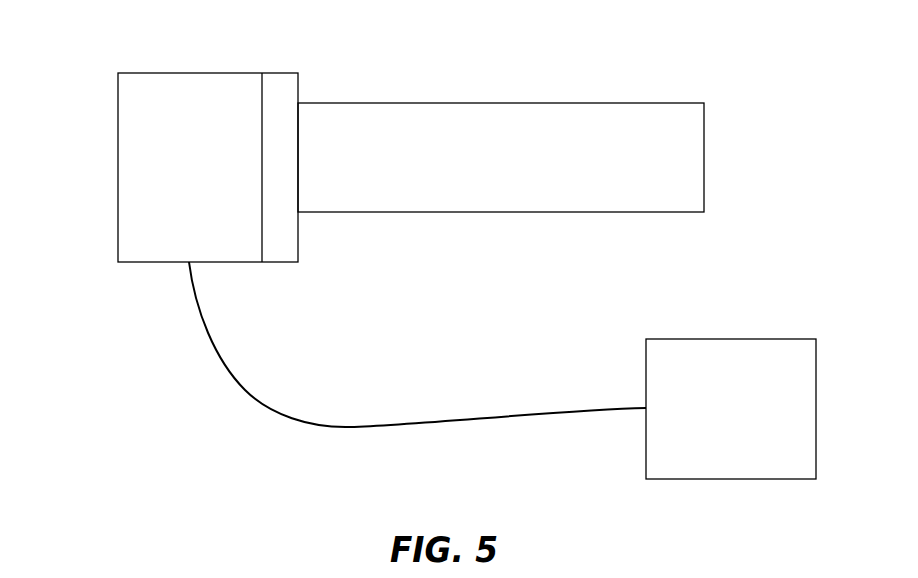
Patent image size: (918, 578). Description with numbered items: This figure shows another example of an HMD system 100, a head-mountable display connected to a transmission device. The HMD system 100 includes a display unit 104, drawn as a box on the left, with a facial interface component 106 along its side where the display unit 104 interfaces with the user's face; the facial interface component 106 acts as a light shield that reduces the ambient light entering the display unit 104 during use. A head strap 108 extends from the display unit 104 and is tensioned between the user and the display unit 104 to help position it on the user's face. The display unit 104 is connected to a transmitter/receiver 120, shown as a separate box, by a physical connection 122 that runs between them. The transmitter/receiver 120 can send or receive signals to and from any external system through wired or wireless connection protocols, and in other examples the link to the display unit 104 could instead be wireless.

The HMD system 100 is at (88, 93).
The display unit 104 is at (140, 216).
The facial interface component 106 is at (282, 73).
The head strap 108 is at (565, 123).
The transmitter/receiver 120 is at (727, 360).
The physical connection 122 is at (245, 388).